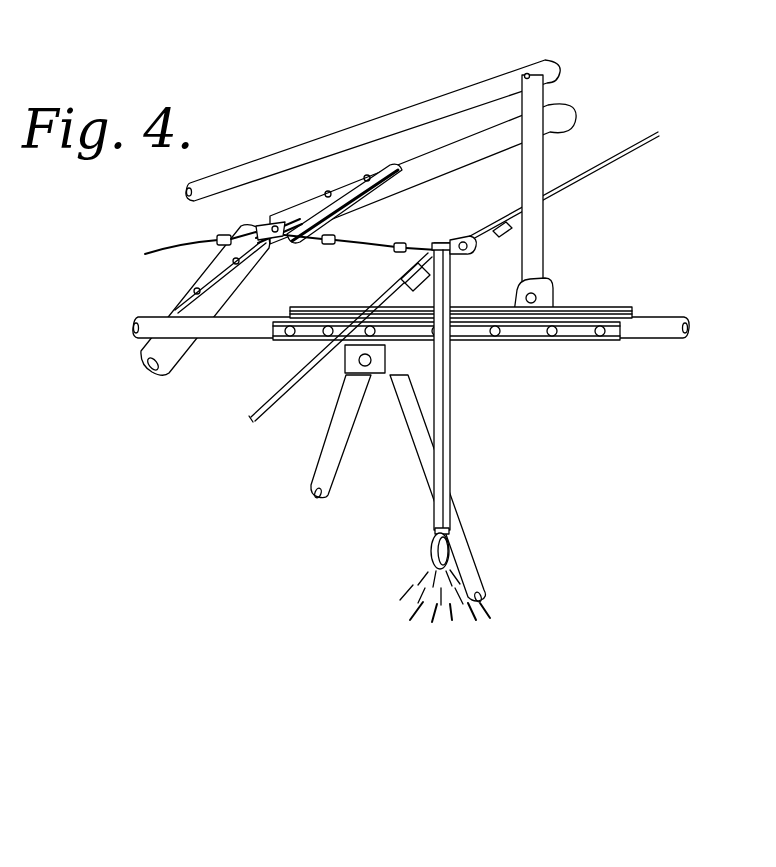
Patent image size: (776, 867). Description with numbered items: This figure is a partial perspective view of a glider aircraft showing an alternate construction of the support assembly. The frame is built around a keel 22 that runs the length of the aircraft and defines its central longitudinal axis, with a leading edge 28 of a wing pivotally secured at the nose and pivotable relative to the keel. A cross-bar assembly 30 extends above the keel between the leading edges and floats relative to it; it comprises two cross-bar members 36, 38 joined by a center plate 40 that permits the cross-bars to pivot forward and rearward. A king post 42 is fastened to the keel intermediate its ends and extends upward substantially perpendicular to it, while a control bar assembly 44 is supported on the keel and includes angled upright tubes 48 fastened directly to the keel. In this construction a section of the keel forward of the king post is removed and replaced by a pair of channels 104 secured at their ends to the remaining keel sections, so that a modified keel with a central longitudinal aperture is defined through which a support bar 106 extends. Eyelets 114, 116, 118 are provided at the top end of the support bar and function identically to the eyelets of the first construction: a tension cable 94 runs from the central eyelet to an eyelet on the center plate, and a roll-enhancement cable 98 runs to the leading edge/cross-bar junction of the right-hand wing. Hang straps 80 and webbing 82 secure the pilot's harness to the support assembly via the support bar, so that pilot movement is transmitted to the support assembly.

The keel 22 is at (242, 320).
The leading edge 28 is at (368, 128).
The cross-bar assembly 30 is at (192, 274).
The cross-bar member 36 is at (168, 357).
The cross-bar member 38 is at (472, 150).
The center plate 40 is at (297, 216).
The king post 42 is at (535, 157).
The control bar assembly 44 is at (473, 547).
The upright tube 48 is at (310, 483).
The hang strap 80 is at (408, 603).
The webbing 82 is at (428, 557).
The tension cable 94 is at (350, 240).
The roll-enhancement cable 98 is at (620, 158).
The channel 104 is at (608, 310).
The support bar 106 is at (440, 428).
The eyelet 114 is at (430, 252).
The eyelet 116 is at (403, 276).
The eyelet 118 is at (452, 256).